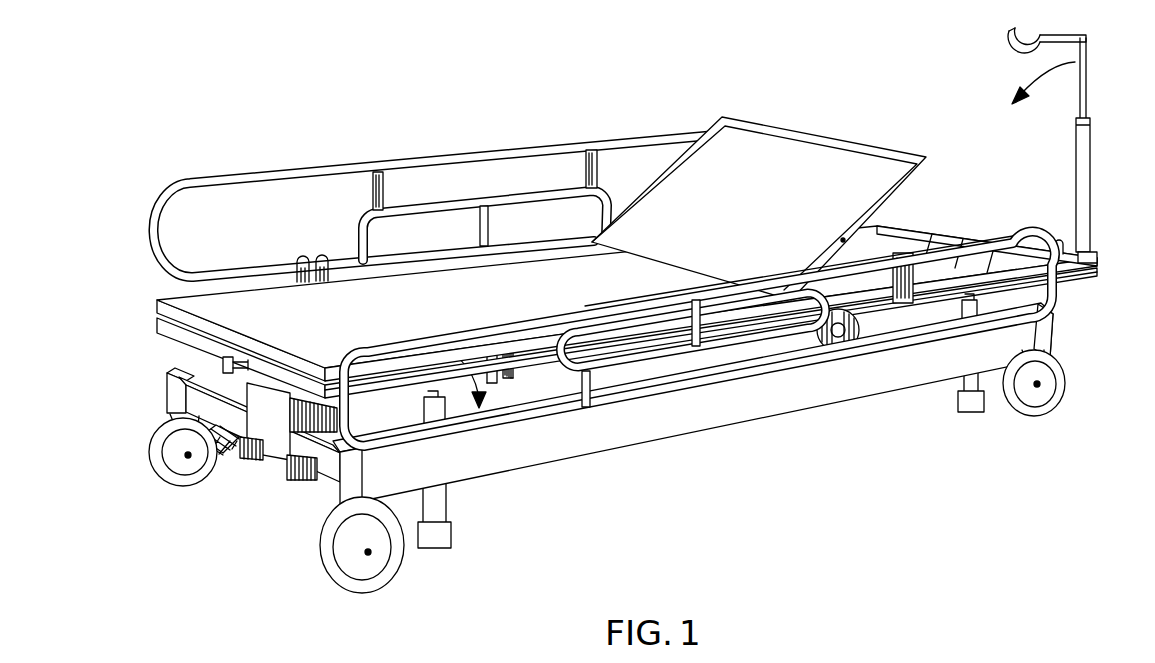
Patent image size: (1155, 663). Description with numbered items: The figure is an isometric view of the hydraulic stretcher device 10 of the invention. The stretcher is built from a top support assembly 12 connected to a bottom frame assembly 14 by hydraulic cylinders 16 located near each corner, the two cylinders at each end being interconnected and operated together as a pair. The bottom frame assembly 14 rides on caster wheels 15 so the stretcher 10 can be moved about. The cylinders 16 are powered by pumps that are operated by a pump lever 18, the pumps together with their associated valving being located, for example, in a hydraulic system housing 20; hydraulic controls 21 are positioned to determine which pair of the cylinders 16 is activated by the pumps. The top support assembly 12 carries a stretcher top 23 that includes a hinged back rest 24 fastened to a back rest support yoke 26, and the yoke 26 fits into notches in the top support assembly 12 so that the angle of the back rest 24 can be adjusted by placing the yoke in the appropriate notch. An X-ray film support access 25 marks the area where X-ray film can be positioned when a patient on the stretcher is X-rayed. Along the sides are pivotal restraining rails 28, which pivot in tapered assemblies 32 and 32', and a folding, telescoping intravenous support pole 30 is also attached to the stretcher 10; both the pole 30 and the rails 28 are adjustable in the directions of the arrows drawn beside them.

The hydraulic stretcher device 10 is at (787, 514).
The top support assembly 12 is at (113, 327).
The bottom frame assembly 14 is at (578, 480).
The caster wheels 15 is at (397, 576).
The hydraulic cylinders 16 is at (452, 540).
The pump lever 18 is at (222, 455).
The hydraulic system housing 20 is at (295, 481).
The hydraulic controls 21 is at (215, 366).
The stretcher top 23 is at (160, 302).
The back rest 24 is at (838, 139).
The X-ray film support access 25 is at (205, 335).
The back rest support yoke 26 is at (890, 228).
The restraining rails 28 is at (1050, 303).
The intravenous support pole 30 is at (1090, 218).
The tapered assemblies 32 is at (391, 319).
The tapered assembly 32' is at (1034, 231).